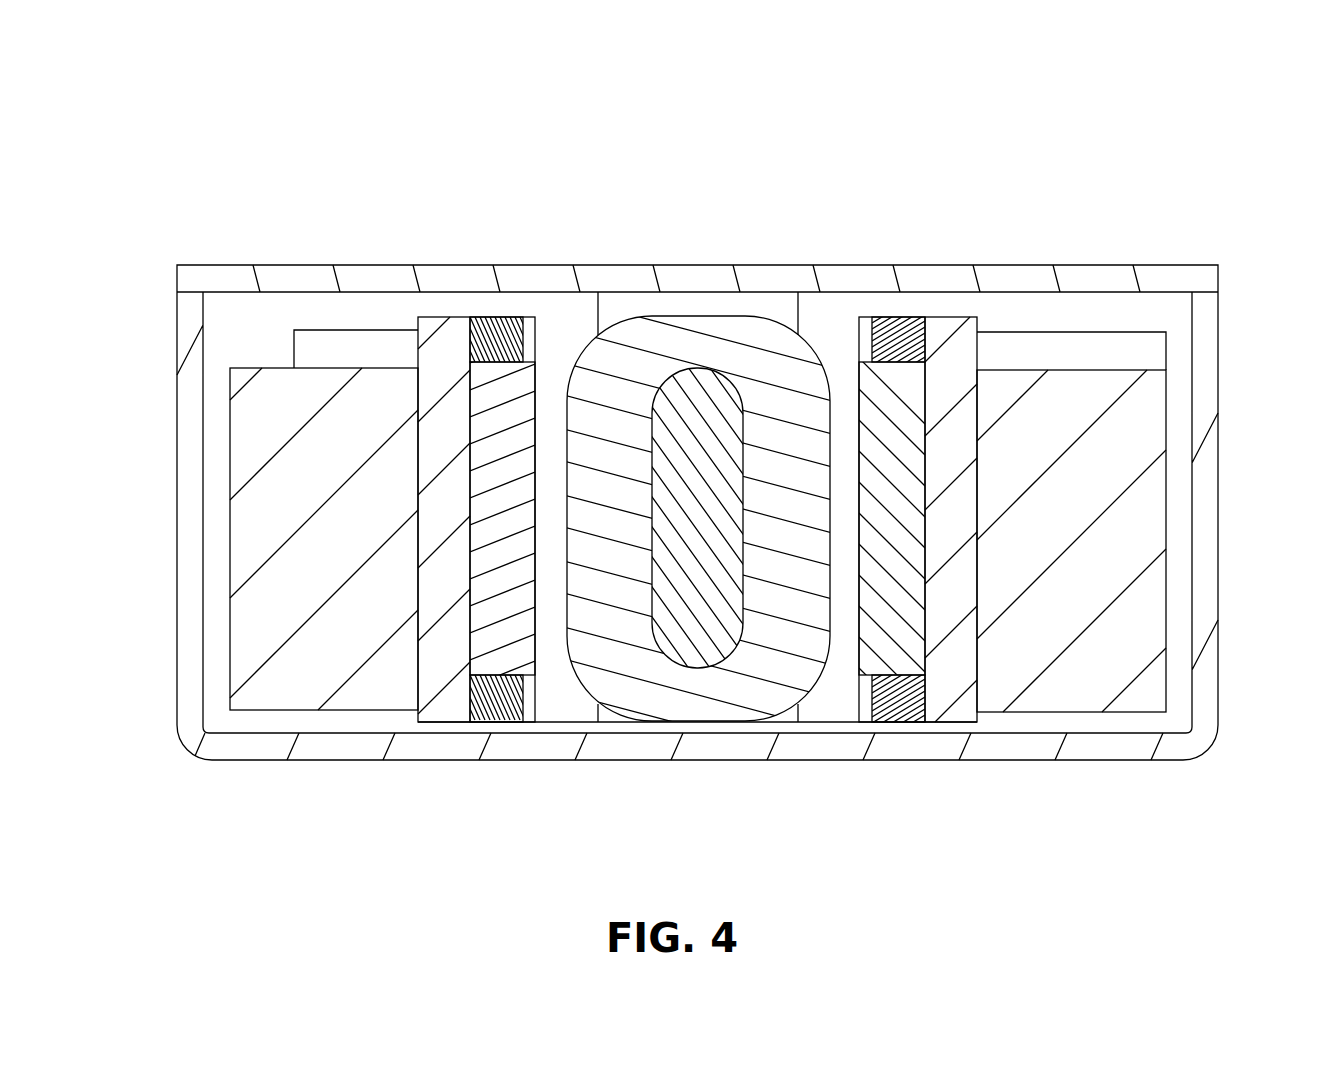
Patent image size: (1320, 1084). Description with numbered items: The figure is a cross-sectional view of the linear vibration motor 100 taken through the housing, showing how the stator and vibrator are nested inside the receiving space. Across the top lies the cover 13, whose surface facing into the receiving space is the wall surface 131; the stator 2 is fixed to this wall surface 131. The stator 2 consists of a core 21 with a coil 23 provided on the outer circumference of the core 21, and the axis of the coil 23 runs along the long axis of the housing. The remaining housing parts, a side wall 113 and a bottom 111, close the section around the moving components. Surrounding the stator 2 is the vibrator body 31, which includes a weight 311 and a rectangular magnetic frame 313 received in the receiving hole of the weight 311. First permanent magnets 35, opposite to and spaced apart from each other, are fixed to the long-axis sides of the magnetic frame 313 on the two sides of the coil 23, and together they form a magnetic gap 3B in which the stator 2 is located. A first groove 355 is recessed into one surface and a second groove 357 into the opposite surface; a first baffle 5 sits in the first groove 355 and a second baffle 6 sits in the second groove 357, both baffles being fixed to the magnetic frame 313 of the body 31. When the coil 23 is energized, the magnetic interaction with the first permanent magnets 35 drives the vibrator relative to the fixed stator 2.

The linear vibration motor 100 is at (699, 83).
The cover 13 is at (1080, 273).
The wall surface 131 is at (1127, 292).
The side wall 113 is at (192, 630).
The bottom plate 111 is at (310, 742).
The first baffle 5 is at (488, 317).
The magnetic gap 3B is at (569, 695).
The first groove 355 is at (533, 338).
The second groove 357 is at (534, 712).
The second baffle 6 is at (490, 722).
The stator 2 is at (608, 197).
The core 21 is at (657, 388).
The coil 23 is at (725, 333).
The body 31 is at (1108, 832).
The weight 311 is at (950, 698).
The magnetic frame 313 is at (1080, 693).
The first permanent magnet 35 is at (873, 613).